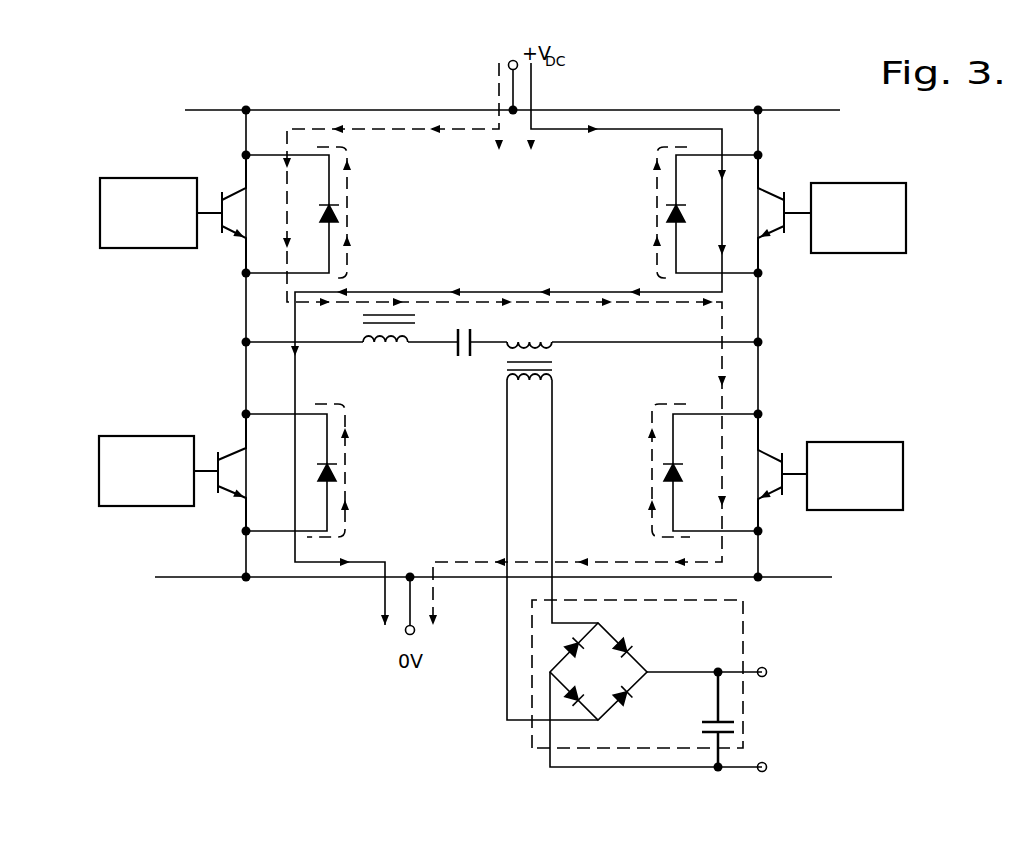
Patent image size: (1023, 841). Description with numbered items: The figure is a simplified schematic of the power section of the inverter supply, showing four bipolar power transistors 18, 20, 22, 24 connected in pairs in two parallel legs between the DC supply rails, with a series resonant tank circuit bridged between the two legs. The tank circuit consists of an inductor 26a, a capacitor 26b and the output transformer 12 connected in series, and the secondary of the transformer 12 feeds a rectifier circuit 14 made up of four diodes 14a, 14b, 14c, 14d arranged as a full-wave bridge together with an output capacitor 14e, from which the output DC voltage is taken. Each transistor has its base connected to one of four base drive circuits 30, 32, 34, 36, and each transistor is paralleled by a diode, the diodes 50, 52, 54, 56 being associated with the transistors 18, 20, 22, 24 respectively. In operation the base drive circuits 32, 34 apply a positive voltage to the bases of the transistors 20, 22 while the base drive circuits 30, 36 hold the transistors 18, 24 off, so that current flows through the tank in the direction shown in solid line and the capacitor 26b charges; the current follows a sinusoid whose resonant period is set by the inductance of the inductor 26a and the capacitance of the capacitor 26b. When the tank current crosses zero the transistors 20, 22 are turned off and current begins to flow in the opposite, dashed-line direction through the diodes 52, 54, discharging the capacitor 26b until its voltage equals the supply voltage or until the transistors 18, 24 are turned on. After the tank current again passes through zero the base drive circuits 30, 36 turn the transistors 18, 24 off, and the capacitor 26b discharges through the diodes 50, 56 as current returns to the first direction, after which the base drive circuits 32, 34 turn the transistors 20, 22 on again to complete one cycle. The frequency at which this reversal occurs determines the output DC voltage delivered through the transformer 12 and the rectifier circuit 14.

The output transformer 12 is at (560, 368).
The full-wave rectifier 14 is at (675, 682).
The diode 14a is at (571, 641).
The diode 14b is at (633, 648).
The diode 14c is at (574, 706).
The diode 14d is at (626, 700).
The output capacitor 14e is at (736, 728).
The bipolar power transistor 18 is at (244, 238).
The bipolar power transistor 20 is at (238, 500).
The bipolar power transistor 22 is at (793, 195).
The bipolar power transistor 24 is at (766, 500).
The inductor 26a is at (371, 344).
The capacitor 26b is at (474, 336).
The base drive circuit 30 is at (197, 178).
The base drive circuit 32 is at (99, 436).
The base drive circuit 34 is at (906, 183).
The base drive circuit 36 is at (903, 442).
The diode 50 is at (326, 205).
The diode 52 is at (337, 463).
The diode 54 is at (670, 206).
The diode 56 is at (665, 464).